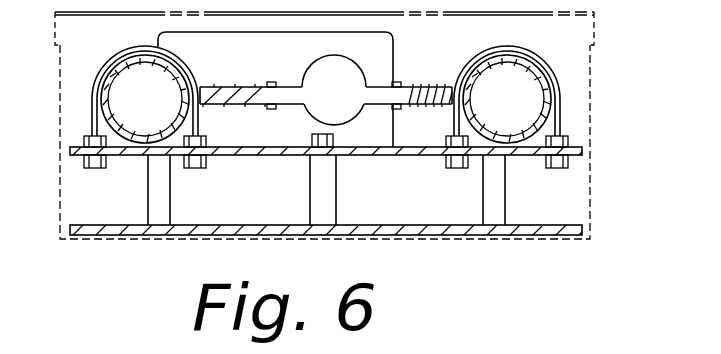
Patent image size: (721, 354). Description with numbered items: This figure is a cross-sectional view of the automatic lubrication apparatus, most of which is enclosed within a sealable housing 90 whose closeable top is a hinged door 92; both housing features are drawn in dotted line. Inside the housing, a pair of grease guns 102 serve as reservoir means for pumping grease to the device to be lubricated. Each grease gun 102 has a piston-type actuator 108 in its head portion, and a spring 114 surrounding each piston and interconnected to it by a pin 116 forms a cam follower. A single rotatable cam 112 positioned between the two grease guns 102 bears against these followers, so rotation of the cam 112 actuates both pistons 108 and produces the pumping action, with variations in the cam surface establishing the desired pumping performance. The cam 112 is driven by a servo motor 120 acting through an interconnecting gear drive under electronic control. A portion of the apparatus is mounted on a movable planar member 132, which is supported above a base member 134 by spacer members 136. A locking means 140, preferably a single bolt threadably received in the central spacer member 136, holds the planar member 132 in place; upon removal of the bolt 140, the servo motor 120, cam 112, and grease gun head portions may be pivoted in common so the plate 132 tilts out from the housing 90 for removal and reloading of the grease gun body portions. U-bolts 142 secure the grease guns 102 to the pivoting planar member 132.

The sealable housing 90 is at (590, 65).
The hinged door 92 is at (595, 13).
The grease gun 102 is at (161, 110).
The piston-type actuator 108 is at (254, 105).
The rotatable cam 112 is at (338, 61).
The spring 114 is at (223, 87).
The pin 116 is at (261, 105).
The servo motor 120 is at (396, 41).
The movable planar member 132 is at (260, 156).
The base member 134 is at (222, 225).
The spacer member 136 is at (147, 213).
The locking means 140 is at (332, 133).
The U-bolt 142 is at (101, 68).